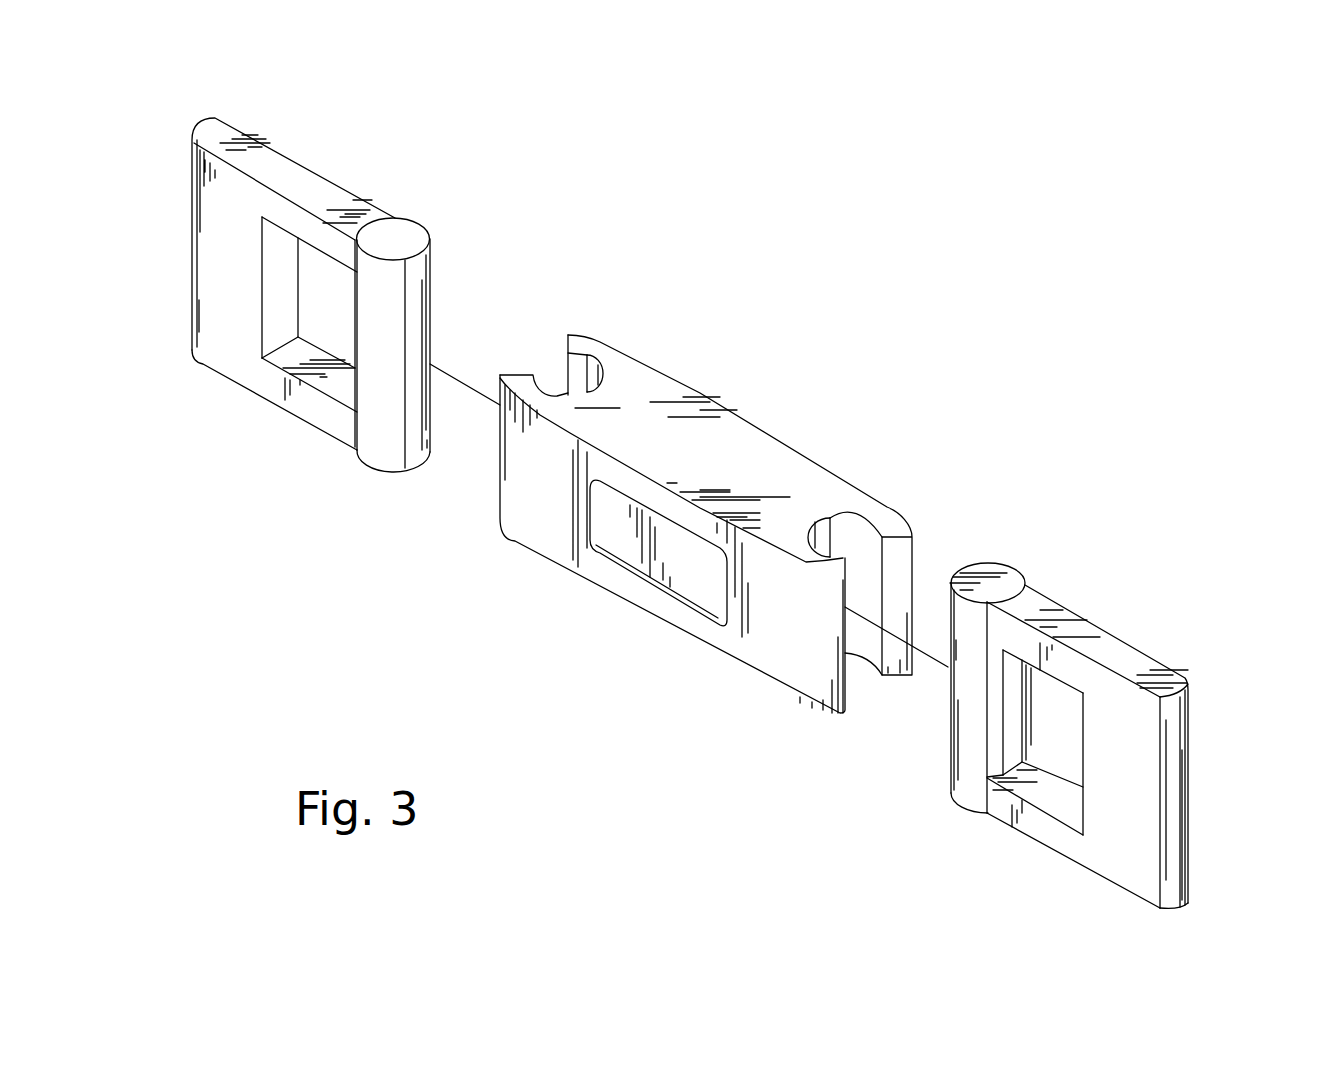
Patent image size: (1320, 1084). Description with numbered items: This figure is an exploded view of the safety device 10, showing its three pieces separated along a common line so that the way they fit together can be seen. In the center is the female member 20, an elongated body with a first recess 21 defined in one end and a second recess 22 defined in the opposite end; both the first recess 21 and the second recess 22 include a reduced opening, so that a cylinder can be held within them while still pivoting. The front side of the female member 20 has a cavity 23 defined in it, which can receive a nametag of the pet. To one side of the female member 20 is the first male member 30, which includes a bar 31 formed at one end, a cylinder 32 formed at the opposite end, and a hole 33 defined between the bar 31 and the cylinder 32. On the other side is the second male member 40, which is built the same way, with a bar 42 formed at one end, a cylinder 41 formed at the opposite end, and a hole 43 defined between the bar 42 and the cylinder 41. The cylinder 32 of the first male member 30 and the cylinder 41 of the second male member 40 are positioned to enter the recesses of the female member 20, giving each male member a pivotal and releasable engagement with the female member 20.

The safety device 10 is at (705, 519).
The female member 20 is at (717, 528).
The first recess 21 is at (830, 527).
The second recess 22 is at (585, 375).
The cavity 23 is at (659, 525).
The first male member 30 is at (1078, 741).
The bar 31 is at (1167, 785).
The cylinder 32 is at (973, 722).
The hole 33 is at (1062, 750).
The second male member 40 is at (326, 295).
The cylinder 41 is at (407, 310).
The bar 42 is at (208, 210).
The hole 43 is at (312, 295).